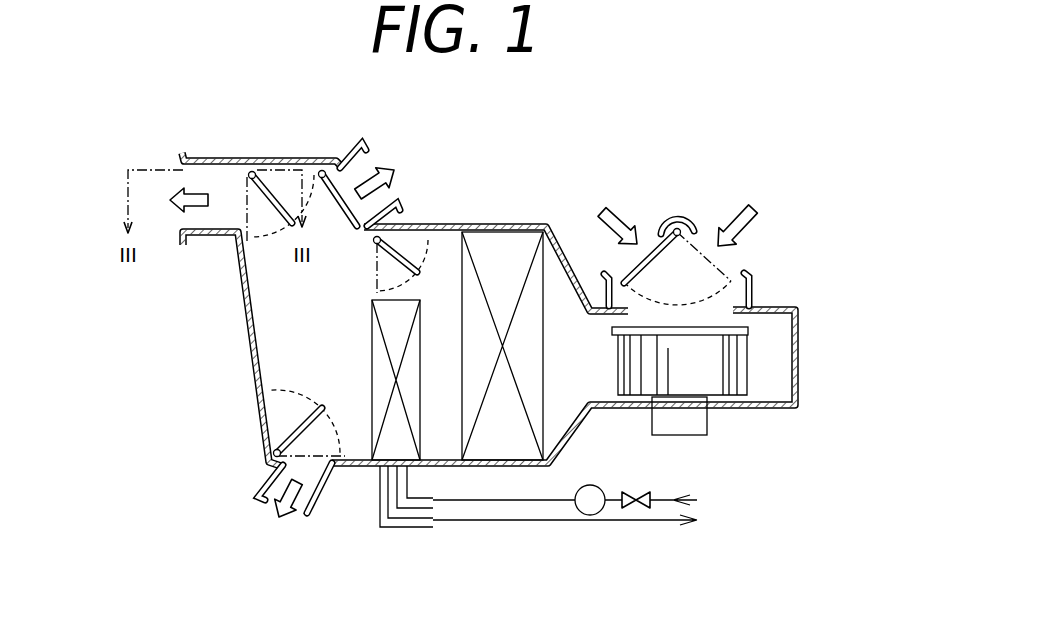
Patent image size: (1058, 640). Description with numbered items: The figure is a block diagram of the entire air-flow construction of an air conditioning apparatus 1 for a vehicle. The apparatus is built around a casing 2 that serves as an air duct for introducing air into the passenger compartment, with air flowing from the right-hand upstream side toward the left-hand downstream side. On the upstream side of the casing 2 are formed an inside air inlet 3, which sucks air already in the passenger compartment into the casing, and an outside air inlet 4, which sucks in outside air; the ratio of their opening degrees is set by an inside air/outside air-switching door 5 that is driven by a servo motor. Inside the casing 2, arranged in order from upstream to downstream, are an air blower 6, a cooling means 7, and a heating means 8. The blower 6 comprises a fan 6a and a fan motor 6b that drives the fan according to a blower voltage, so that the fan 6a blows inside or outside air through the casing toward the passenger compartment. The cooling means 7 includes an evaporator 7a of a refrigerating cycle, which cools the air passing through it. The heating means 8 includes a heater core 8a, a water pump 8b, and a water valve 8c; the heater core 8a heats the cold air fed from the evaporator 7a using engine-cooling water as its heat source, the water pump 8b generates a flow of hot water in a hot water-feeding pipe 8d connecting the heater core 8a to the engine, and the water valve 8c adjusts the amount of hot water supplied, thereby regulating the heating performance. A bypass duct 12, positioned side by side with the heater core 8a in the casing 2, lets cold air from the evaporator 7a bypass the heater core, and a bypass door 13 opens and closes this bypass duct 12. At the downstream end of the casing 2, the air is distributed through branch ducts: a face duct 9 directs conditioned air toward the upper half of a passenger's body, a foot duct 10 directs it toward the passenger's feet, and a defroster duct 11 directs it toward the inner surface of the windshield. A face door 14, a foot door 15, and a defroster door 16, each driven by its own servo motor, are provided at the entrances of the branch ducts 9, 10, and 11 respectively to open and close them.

The air conditioning apparatus 1 is at (765, 130).
The casing 2 is at (448, 226).
The inside air inlet 3 is at (650, 250).
The outside air inlet 4 is at (728, 254).
The inside air/outside air-switching door 5 is at (620, 275).
The air blower 6 is at (718, 423).
The fan 6a is at (733, 377).
The fan motor 6b is at (683, 427).
The cooling means 7 is at (488, 226).
The evaporator 7a is at (508, 250).
The heating means 8 is at (380, 484).
The heater core 8a is at (378, 472).
The water pump 8b is at (590, 516).
The water valve 8c is at (632, 508).
The hot water-feeding pipe 8d is at (490, 524).
The branch duct (face duct) 9 is at (206, 157).
The branch duct (foot duct) 10 is at (265, 481).
The branch duct (defroster duct) 11 is at (352, 146).
The bypass duct 12 is at (373, 270).
The bypass door 13 is at (398, 246).
The face door 14 is at (271, 170).
The foot door 15 is at (293, 430).
The defroster door 16 is at (337, 162).